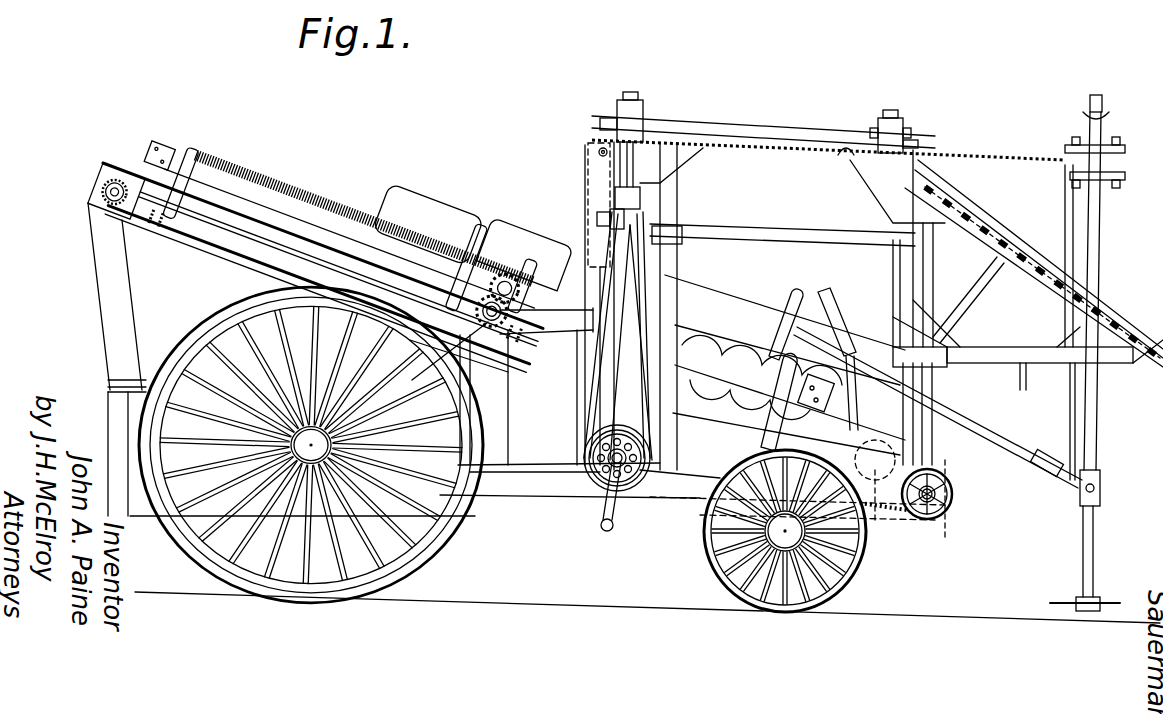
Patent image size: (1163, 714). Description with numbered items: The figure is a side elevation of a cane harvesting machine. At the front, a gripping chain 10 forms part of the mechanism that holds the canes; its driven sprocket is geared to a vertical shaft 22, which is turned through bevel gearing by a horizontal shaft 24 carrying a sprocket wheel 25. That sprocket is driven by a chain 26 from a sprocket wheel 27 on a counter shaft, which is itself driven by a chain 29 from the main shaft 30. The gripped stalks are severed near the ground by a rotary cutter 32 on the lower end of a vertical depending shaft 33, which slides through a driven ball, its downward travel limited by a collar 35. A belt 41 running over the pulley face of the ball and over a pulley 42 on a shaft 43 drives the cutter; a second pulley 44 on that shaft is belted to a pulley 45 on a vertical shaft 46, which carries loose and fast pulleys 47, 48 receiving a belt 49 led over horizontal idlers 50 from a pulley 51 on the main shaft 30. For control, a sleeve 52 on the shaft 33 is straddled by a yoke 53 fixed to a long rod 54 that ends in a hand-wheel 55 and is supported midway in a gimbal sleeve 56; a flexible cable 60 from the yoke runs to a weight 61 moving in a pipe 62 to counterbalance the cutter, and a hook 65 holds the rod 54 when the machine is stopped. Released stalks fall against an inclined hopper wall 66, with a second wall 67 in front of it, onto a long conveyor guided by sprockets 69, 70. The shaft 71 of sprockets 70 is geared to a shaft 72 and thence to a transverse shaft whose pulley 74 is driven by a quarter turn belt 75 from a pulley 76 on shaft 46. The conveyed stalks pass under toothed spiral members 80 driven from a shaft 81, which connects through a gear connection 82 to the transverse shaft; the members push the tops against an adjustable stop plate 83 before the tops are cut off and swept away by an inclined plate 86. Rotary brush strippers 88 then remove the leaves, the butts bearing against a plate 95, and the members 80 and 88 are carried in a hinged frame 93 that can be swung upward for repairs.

The chain 10 is at (983, 228).
The vertical shaft 22 is at (935, 456).
The horizontal shaft 24 is at (945, 504).
The sprocket wheel 25 is at (953, 492).
The chain 26 is at (905, 520).
The sprocket wheel 27 is at (712, 536).
The chain 29 is at (680, 500).
The main shaft 30 is at (592, 482).
The rotary cutter 32 is at (1098, 600).
The vertical depending shaft 33 is at (1102, 208).
The collar 35 is at (1098, 110).
The belt 41 is at (1022, 142).
The pulley 42 is at (846, 158).
The shaft 43 is at (890, 115).
The pulley 44 is at (912, 124).
The pulley 45 is at (642, 118).
The vertical shaft 46 is at (628, 164).
The loose pulley 47 is at (615, 194).
The fast pulley 48 is at (612, 212).
The belt 49 is at (642, 254).
The horizontal idlers 50 is at (652, 226).
The pulley 51 is at (590, 450).
The sleeve 52 is at (1100, 484).
The yoke 53 is at (1058, 462).
The rod 54 is at (975, 424).
The hand-wheel 55 is at (796, 299).
The sleeve 56 is at (938, 380).
The flexible cable 60 is at (1070, 408).
The weight 61 is at (588, 222).
The pipe 62 is at (596, 150).
The hook 65 is at (1027, 388).
The inclined hopper wall 66 is at (830, 300).
The hopper wall 67 is at (920, 428).
The sprockets 69 is at (872, 520).
The sprockets 70 is at (90, 210).
The shaft 71 is at (143, 177).
The shaft 72 is at (321, 277).
The pulley 74 is at (313, 445).
The quarter turn belt 75 is at (488, 276).
The pulley 76 is at (622, 298).
The spiral members 80 is at (692, 337).
The shaft 81 is at (505, 288).
The gear connection 82 is at (522, 300).
The stop plate 83 is at (525, 254).
The inclined plate 86 is at (428, 224).
The strippers 88 is at (354, 227).
The frame 93 is at (722, 355).
The plate 95 is at (323, 245).